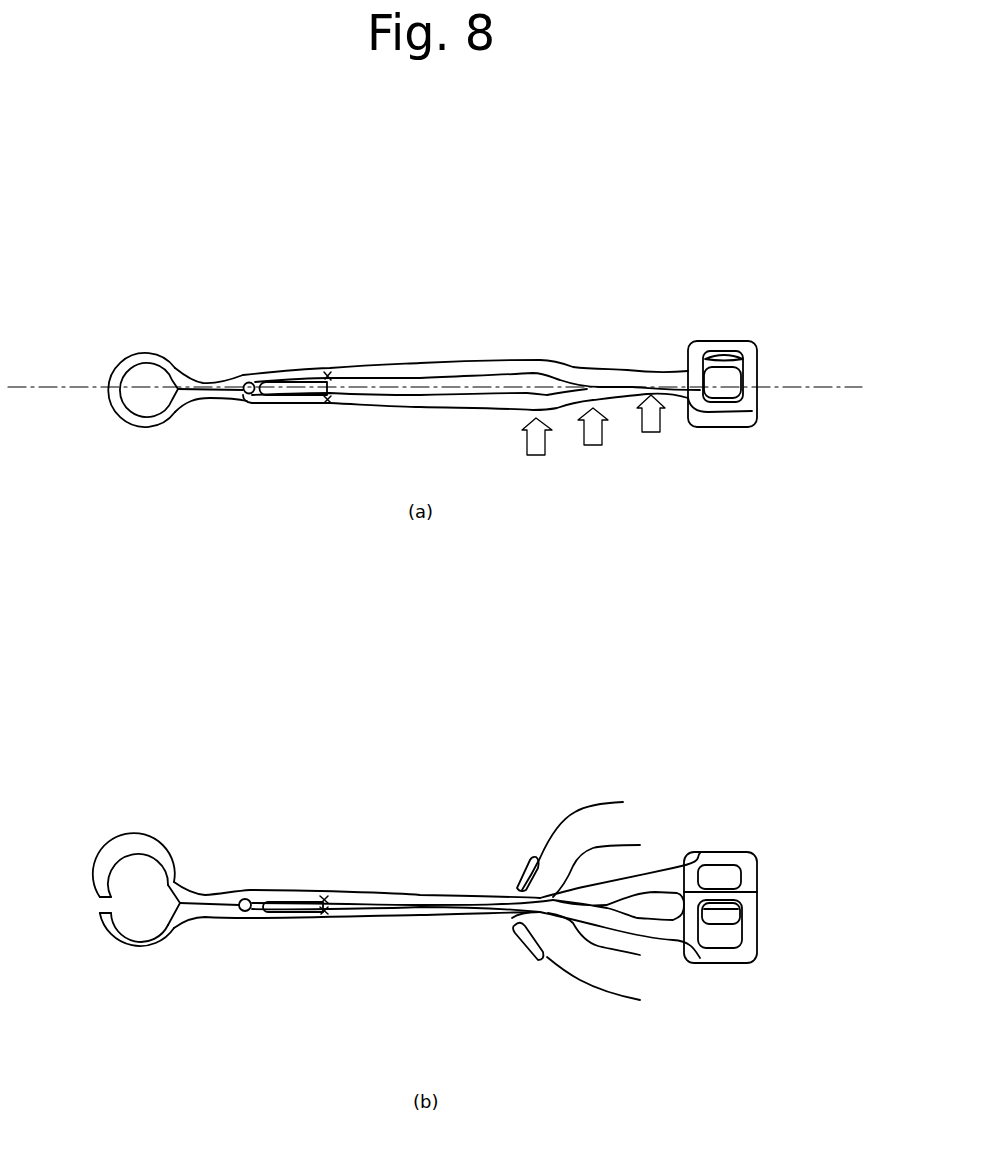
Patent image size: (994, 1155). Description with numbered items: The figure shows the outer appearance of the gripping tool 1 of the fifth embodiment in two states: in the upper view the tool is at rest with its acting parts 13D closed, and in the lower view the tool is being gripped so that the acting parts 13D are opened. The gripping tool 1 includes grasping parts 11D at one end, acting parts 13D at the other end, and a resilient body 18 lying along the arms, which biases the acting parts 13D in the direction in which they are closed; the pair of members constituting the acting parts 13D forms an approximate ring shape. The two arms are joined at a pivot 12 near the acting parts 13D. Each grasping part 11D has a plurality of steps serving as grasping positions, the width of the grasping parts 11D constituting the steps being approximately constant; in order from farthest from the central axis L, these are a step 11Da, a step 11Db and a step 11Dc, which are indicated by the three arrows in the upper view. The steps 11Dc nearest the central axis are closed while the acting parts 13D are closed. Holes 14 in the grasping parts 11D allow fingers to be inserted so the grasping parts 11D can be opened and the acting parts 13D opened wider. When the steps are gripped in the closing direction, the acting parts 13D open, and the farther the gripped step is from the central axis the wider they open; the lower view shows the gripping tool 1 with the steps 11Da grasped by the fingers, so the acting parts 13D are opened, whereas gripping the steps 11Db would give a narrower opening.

The gripping tool 1 is at (150, 207).
The grasping parts 11D is at (727, 346).
The step 11Da is at (543, 451).
The step 11Db is at (602, 442).
The step 11Dc is at (661, 429).
The pivot 12 is at (242, 404).
The acting parts 13D is at (135, 425).
The holes 14 is at (723, 393).
The resilient body 18 is at (305, 400).